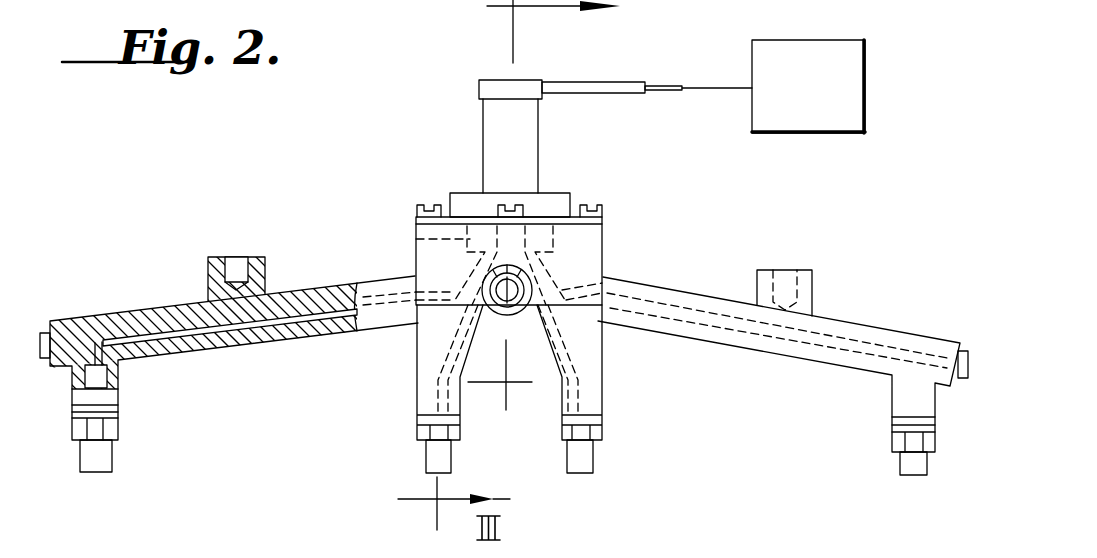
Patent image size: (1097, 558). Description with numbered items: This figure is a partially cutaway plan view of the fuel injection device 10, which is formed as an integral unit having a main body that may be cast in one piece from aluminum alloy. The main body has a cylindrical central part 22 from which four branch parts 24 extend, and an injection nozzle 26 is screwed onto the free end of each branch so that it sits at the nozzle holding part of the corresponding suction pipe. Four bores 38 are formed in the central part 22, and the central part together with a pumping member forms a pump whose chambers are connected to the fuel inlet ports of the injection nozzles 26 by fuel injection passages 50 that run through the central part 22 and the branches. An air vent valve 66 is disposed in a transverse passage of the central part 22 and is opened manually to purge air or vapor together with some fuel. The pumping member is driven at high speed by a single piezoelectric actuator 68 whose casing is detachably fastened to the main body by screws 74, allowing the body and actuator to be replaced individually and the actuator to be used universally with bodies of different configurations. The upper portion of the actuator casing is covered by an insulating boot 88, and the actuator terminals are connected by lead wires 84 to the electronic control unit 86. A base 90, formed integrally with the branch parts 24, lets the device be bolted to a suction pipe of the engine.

The fuel injection device 10 is at (382, 189).
The cylindrical central part 22 is at (597, 242).
The branch parts 24 is at (197, 345).
The injection nozzles 26 is at (128, 437).
The bores 38 is at (416, 238).
The fuel injection passages 50 is at (288, 314).
The air vent valve 66 is at (534, 294).
The piezoelectric actuator 68 is at (462, 143).
The screws 74 is at (603, 208).
The lead wires 84 is at (647, 72).
The electronic control unit 86 is at (853, 63).
The insulating boot 88 is at (527, 82).
The base 90 is at (208, 271).